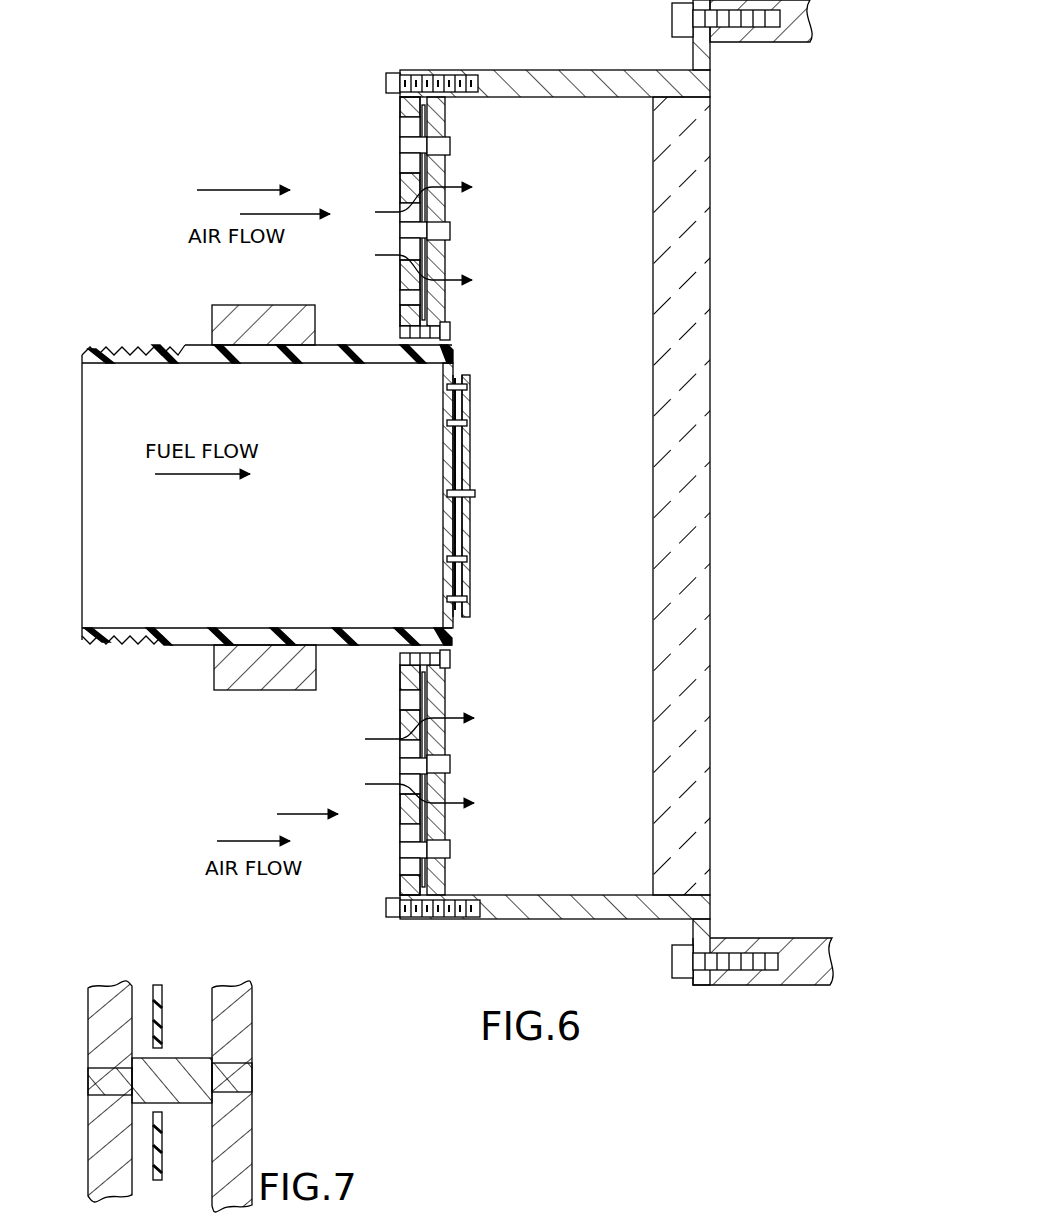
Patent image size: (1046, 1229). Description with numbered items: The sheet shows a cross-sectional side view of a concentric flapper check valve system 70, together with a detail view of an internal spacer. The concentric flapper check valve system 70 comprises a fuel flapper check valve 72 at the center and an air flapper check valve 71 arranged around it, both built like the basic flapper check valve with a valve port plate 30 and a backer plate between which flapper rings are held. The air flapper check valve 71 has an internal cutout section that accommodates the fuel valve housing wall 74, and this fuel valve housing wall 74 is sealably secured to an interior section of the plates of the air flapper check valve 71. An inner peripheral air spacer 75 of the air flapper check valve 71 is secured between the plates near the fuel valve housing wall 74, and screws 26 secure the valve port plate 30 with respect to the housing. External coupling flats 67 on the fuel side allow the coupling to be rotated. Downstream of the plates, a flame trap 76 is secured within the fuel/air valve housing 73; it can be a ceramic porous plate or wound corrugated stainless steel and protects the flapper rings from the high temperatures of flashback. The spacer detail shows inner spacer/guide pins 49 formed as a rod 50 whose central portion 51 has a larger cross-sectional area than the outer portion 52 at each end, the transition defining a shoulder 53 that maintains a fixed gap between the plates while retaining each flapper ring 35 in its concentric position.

In FIG. 6, the screws 26 is at (447, 75).
In FIG. 7, the valve port plate 30 is at (92, 1022).
In FIG. 7, the flapper ring 35 is at (150, 1000).
In FIG. 7, the inner spacer/guide pins 49 is at (189, 993).
In FIG. 7, the rod 50 is at (80, 1085).
In FIG. 7, the central portion 51 is at (189, 1092).
In FIG. 7, the outer portion 52 is at (243, 1070).
In FIG. 7, the joint 53 is at (210, 1060).
In FIG. 6, the external coupling flats 67 is at (218, 325).
In FIG. 6, the concentric flapper check valve system 70 is at (243, 125).
In FIG. 6, the air flapper check valve 71 is at (393, 160).
In FIG. 6, the fuel flapper check valve 72 is at (480, 448).
In FIG. 6, the fuel/air valve housing 73 is at (567, 78).
In FIG. 6, the fuel valve housing wall 74 is at (358, 352).
In FIG. 6, the inner peripheral air spacer 75 is at (432, 326).
In FIG. 6, the flame trap 76 is at (695, 320).